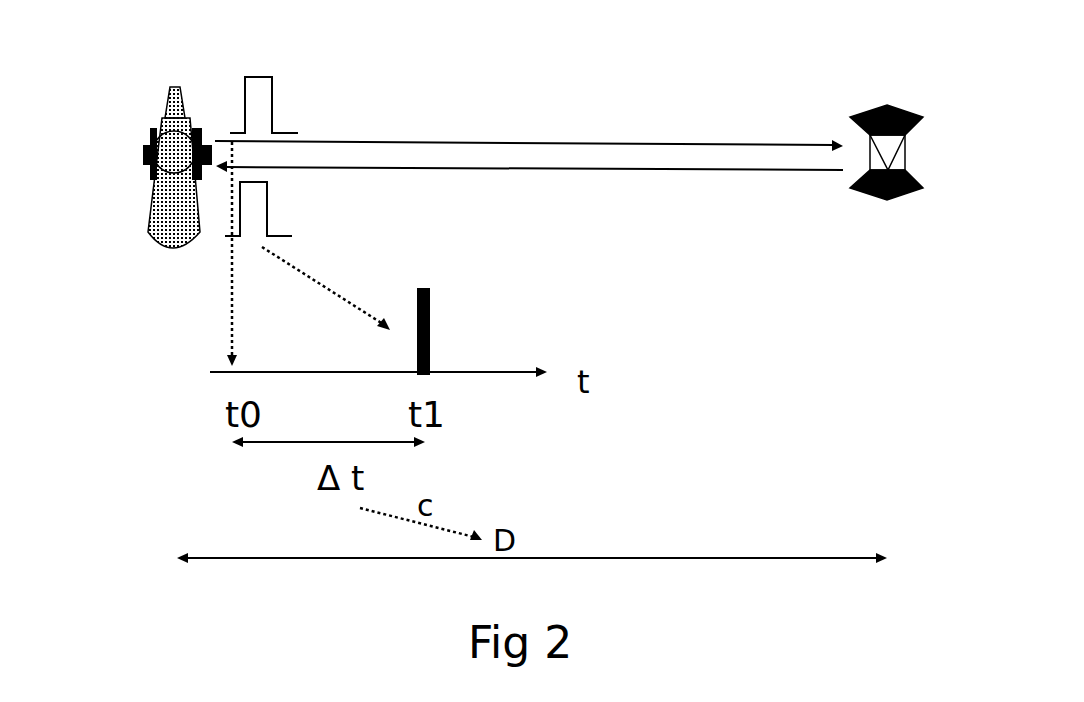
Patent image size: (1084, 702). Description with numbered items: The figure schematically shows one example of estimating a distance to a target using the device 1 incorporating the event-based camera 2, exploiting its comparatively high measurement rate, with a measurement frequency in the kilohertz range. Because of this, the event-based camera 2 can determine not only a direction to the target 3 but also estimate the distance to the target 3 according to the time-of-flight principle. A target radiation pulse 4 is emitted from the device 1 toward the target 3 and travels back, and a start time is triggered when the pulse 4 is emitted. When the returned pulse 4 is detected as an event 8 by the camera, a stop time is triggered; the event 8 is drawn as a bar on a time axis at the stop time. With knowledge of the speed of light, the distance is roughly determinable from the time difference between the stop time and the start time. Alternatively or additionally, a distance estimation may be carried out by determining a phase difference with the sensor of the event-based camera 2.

The distance measuring device 1 is at (128, 82).
The event-based camera 2 is at (203, 104).
The target 3 is at (902, 110).
The target radiation pulse 4 is at (299, 73).
The event 8 is at (430, 307).